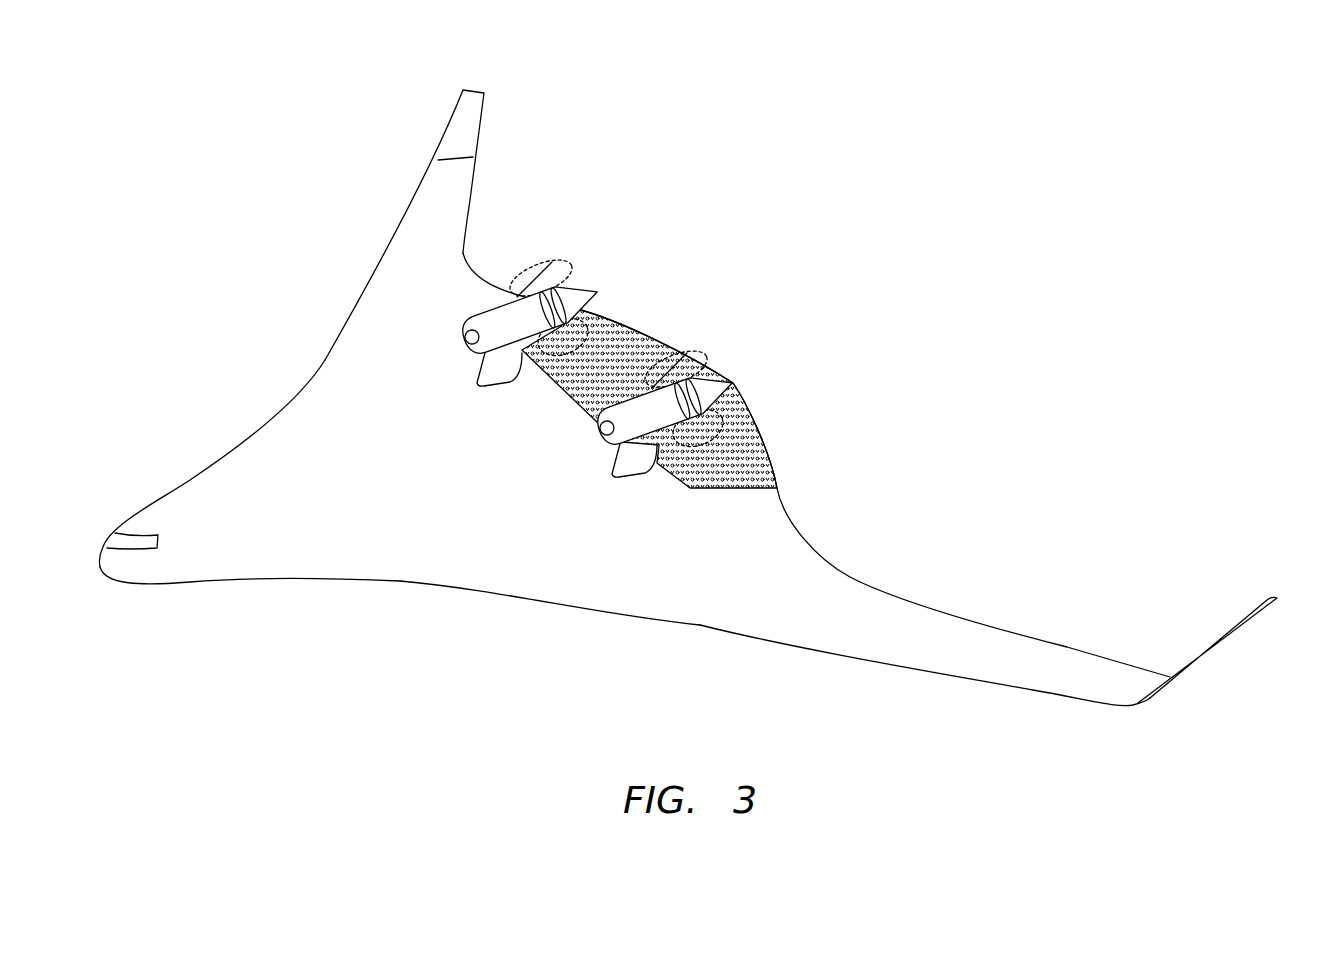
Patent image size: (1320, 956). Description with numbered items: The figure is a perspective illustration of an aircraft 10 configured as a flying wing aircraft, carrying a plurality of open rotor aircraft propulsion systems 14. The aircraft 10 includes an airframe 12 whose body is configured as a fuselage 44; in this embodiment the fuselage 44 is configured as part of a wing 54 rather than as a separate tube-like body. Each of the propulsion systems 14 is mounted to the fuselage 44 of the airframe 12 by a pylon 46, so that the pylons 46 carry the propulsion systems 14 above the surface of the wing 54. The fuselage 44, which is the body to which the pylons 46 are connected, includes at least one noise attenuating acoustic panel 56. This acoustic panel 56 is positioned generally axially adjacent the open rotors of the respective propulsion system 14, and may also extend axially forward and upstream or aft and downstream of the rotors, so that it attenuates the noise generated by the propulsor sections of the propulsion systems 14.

The aircraft 10 is at (233, 152).
The airframe 12 is at (457, 563).
The aircraft propulsion system 14 is at (570, 262).
The fuselage 44 is at (375, 553).
The pylon 46 is at (490, 378).
The wing 54 is at (772, 640).
The acoustic panel 56 is at (747, 447).